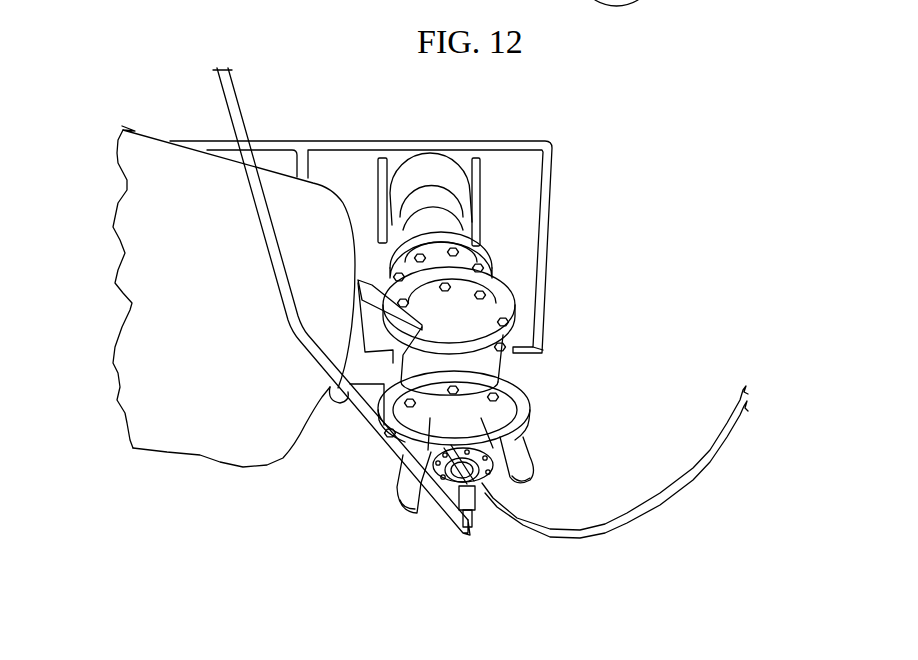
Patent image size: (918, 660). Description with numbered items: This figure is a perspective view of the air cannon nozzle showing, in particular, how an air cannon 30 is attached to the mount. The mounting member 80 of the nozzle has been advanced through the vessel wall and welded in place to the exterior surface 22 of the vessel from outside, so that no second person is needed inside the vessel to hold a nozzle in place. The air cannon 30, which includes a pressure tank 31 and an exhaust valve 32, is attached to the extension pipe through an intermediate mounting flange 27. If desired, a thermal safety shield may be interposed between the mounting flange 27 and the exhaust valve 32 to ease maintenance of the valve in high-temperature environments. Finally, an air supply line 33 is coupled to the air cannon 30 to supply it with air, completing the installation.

The exterior surface of vessel 22 is at (520, 168).
The mounting member 80 is at (443, 173).
The mounting flange 27 is at (487, 255).
The air cannon 30 is at (114, 308).
The pressure tank 31 is at (178, 385).
The exhaust valve 32 is at (347, 390).
The air supply line 33 is at (443, 503).